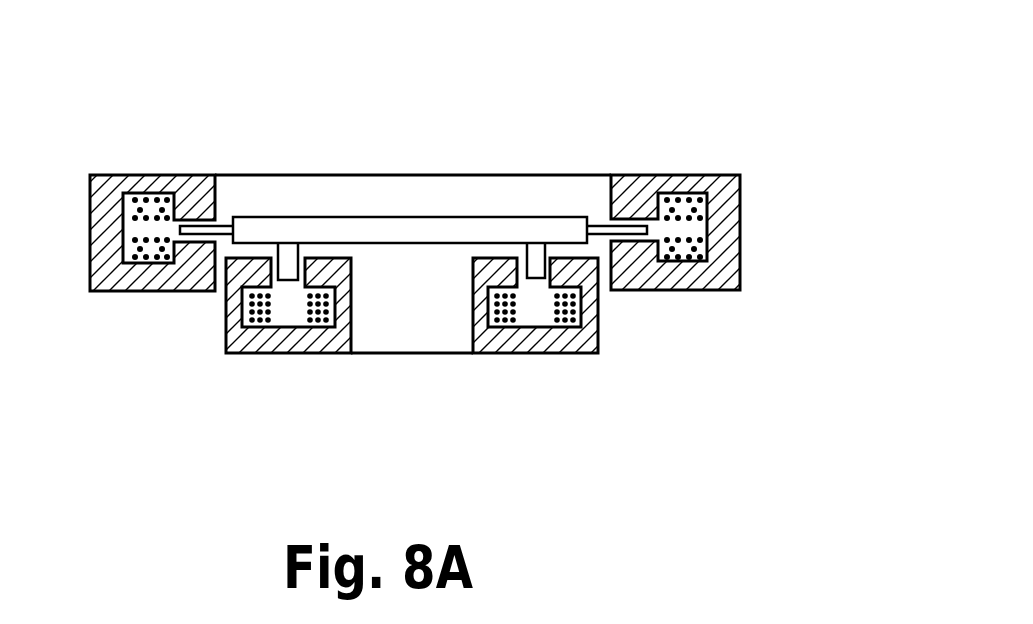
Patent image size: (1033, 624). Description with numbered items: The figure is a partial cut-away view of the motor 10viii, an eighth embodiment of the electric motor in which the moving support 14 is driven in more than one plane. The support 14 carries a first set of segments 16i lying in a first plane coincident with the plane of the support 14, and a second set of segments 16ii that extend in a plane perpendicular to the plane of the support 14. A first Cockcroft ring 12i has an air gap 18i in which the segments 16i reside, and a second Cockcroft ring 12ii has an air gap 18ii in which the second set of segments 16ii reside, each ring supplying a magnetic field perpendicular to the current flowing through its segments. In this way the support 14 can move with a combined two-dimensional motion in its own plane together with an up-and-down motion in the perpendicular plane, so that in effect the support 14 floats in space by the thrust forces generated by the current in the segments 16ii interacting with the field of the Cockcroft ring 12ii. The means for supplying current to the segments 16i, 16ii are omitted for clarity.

The motor 10viii is at (670, 106).
The first Cockcroft ring 12i is at (742, 222).
The second Cockcroft ring 12ii is at (598, 327).
The support 14 is at (477, 217).
The first set of segments 16i is at (198, 222).
The second set of segments 16ii is at (290, 293).
The air gap 18i is at (180, 230).
The air gap 18ii is at (272, 292).